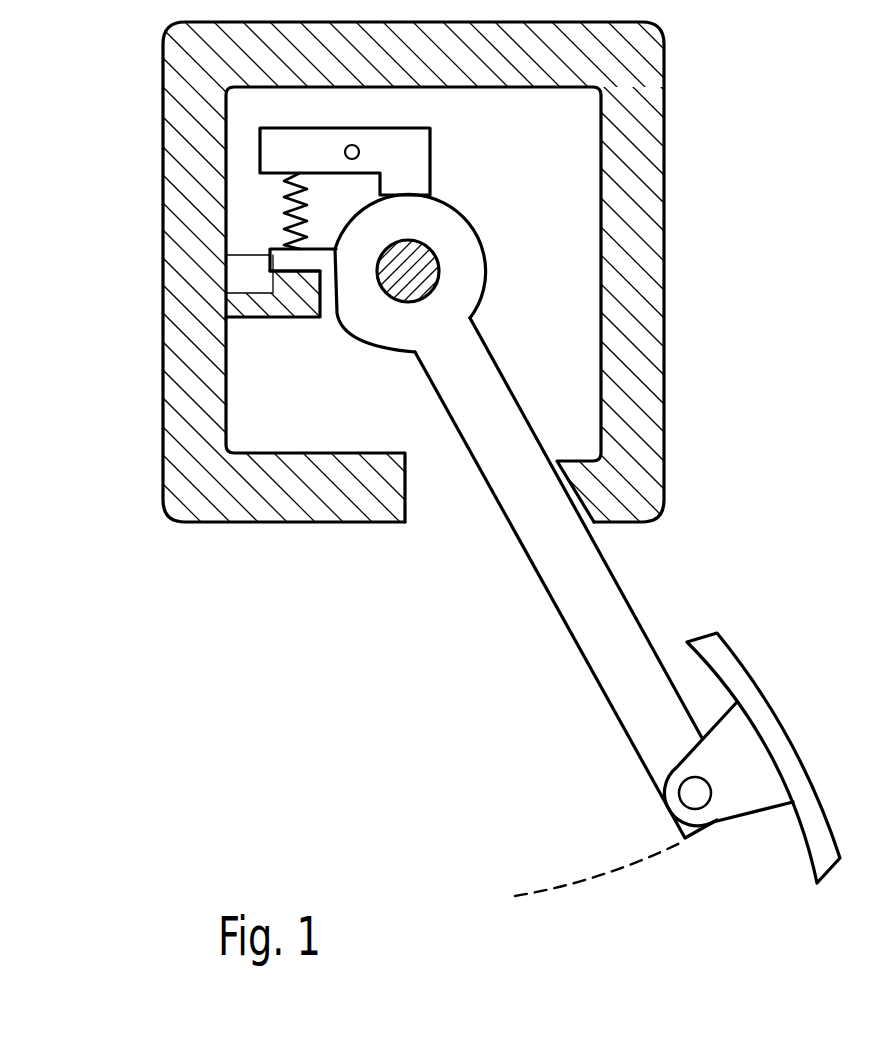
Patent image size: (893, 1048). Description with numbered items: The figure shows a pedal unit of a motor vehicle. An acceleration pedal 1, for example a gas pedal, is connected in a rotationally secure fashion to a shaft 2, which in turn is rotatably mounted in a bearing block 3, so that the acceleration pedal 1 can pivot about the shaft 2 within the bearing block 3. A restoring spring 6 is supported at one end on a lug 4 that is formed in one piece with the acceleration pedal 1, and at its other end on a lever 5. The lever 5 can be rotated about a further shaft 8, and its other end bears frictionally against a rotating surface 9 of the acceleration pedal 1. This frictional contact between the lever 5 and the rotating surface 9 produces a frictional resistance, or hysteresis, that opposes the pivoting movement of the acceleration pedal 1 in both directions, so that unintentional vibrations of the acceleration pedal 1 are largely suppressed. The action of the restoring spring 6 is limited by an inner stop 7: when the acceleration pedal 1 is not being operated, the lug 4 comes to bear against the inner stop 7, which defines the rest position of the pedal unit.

The acceleration pedal 1 is at (548, 563).
The shaft 2 is at (400, 288).
The bearing block 3 is at (340, 507).
The lug 4 is at (270, 255).
The lever 5 is at (418, 170).
The restoring spring 6 is at (282, 183).
The inner stop 7 is at (303, 282).
The shaft 8 is at (359, 152).
The rotating surface 9 is at (464, 218).